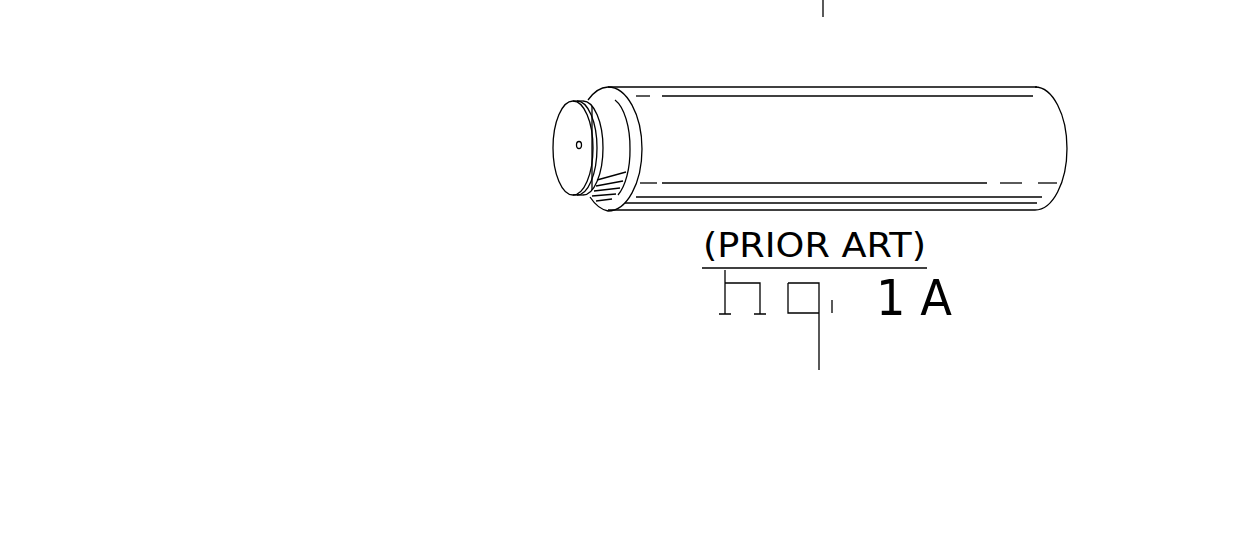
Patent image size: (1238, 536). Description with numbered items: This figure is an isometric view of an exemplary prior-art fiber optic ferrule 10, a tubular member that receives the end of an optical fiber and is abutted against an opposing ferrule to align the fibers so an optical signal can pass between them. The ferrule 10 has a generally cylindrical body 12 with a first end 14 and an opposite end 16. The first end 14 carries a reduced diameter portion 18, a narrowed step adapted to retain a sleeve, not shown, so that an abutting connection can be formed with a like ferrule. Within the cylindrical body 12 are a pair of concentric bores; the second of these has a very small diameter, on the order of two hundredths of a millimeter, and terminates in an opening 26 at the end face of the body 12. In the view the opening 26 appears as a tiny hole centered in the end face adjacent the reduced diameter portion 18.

The ferrule 10 is at (1086, 128).
The cylindrical body 12 is at (813, 118).
The first end 14 is at (574, 112).
The end 16 is at (1063, 175).
The reduced diameter portion 18 is at (592, 197).
The opening 26 is at (576, 146).